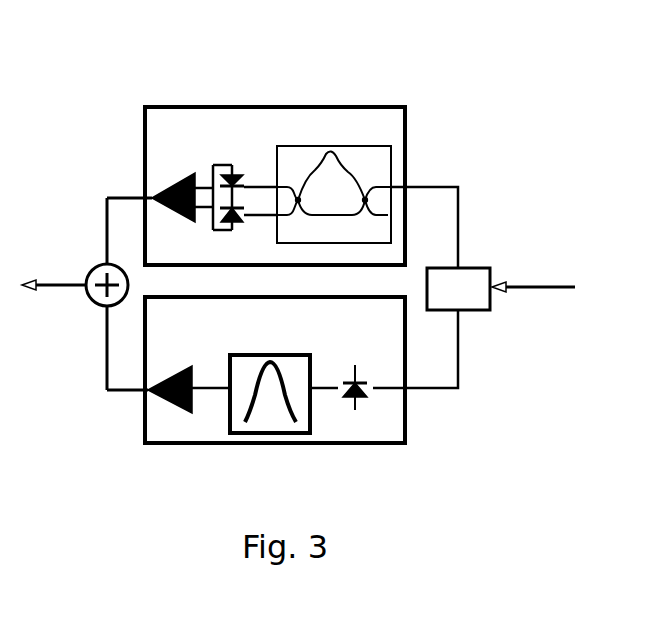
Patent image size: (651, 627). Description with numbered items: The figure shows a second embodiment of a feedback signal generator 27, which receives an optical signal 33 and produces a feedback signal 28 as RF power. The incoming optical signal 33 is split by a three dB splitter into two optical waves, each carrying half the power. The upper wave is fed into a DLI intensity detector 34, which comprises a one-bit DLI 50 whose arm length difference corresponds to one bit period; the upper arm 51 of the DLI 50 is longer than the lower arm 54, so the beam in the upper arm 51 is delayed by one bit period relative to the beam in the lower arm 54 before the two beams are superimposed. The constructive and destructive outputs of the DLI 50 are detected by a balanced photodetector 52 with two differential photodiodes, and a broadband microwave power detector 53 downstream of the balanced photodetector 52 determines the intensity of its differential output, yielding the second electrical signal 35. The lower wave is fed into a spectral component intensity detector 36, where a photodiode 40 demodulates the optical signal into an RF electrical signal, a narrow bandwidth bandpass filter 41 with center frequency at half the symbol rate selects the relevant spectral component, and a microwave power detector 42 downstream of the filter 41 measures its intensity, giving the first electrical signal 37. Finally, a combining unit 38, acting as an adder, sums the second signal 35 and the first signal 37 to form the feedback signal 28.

The feedback signal generator 27 is at (111, 98).
The feedback signal 28 is at (60, 282).
The optical signal 33 is at (535, 285).
The DLI intensity detector 34 is at (188, 105).
The second electrical signal 35 is at (123, 196).
The spectral component intensity detector 36 is at (187, 448).
The first electrical signal 37 is at (132, 400).
The combining unit 38 is at (100, 263).
The photodiode 40 is at (348, 413).
The narrow bandwidth bandpass filter 41 is at (265, 435).
The microwave power detector 42 is at (172, 406).
The 1-bit DLI 50 is at (363, 179).
The upper arm 51 is at (343, 167).
The balanced photodetector 52 is at (225, 150).
The broadband microwave power detector 53 is at (180, 176).
The lower arm 54 is at (325, 217).